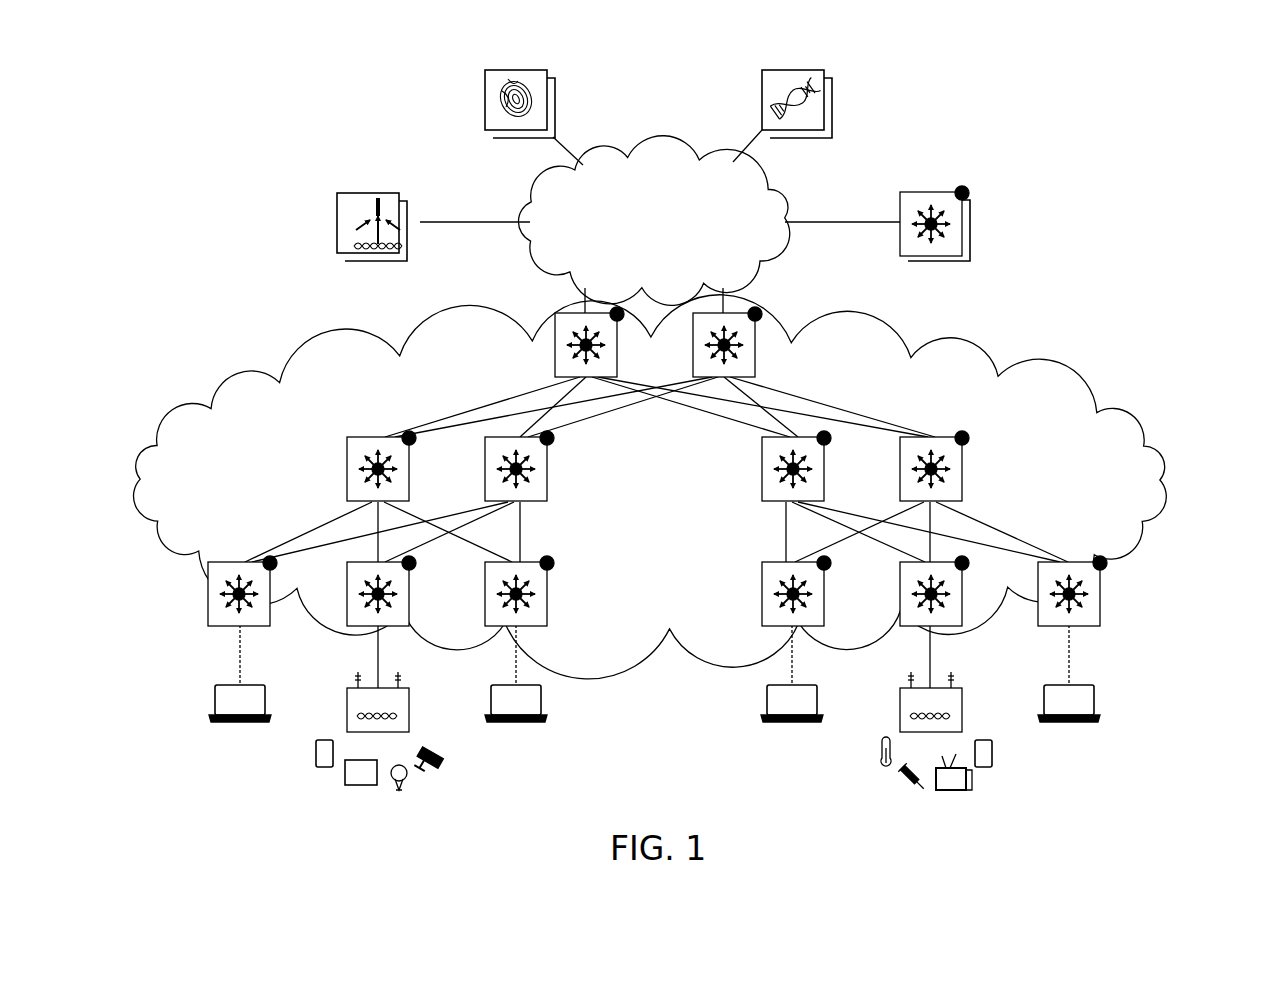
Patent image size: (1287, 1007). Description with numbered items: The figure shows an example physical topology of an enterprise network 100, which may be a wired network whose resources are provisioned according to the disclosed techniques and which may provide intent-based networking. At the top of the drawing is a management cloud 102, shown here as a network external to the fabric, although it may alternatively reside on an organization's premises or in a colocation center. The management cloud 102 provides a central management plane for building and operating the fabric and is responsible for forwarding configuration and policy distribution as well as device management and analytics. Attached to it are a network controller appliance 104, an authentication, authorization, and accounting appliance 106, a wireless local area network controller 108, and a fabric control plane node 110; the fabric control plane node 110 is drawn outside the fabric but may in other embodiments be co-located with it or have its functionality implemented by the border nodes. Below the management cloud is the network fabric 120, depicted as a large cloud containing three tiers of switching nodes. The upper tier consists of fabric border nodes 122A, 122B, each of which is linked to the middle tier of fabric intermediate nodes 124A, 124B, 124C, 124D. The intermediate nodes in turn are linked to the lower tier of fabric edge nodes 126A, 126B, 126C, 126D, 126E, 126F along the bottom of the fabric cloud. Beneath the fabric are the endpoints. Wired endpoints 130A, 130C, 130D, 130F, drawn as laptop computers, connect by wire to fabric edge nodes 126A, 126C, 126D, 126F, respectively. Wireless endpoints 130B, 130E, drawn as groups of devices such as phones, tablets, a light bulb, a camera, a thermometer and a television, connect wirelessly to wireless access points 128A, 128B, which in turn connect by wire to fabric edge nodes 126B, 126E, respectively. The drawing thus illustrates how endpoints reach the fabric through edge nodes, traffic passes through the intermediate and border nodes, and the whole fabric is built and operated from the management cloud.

The enterprise network 100 is at (1228, 172).
The management cloud 102 is at (653, 221).
The network controller appliance 104 is at (830, 140).
The authentication, authorization, and accounting (AAA) appliance 106 is at (493, 142).
The wireless local area network controller (WLC) 108 is at (344, 262).
The fabric control plane node 110 is at (972, 262).
The network fabric 120 is at (650, 487).
The fabric border node 122A is at (556, 312).
The fabric border node 122B is at (757, 312).
The fabric intermediate node 124A is at (348, 436).
The fabric intermediate node 124B is at (550, 504).
The fabric intermediate node 124C is at (762, 504).
The fabric intermediate node 124D is at (963, 436).
The fabric edge node 126A is at (209, 627).
The fabric edge node 126B is at (348, 627).
The fabric edge node 126C is at (550, 627).
The fabric edge node 126D is at (762, 627).
The fabric edge node 126E is at (964, 627).
The fabric edge node 126F is at (1104, 627).
The wireless access point 128A is at (412, 688).
The wireless access point 128B is at (900, 688).
The wired endpoint 130A is at (236, 724).
The wireless endpoint 130B is at (312, 782).
The wired endpoint 130C is at (550, 724).
The wired endpoint 130D is at (762, 724).
The wireless endpoint 130E is at (865, 782).
The wired endpoint 130F is at (1078, 724).